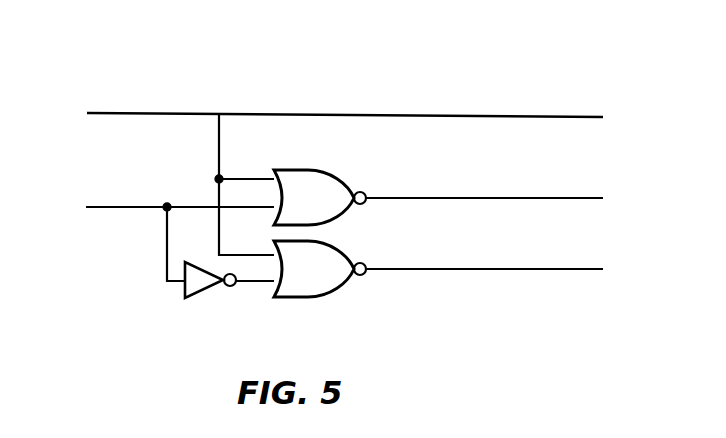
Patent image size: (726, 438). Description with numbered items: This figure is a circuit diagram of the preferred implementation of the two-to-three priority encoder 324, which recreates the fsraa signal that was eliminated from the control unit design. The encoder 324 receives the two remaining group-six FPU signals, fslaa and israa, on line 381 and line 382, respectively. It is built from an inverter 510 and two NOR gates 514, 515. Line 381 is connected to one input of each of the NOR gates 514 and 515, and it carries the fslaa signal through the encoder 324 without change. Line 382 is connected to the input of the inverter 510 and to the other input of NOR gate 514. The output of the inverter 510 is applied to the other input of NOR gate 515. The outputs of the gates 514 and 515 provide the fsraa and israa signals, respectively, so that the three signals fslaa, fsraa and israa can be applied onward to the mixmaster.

The 2-to-3 priority encoder 324 is at (460, 82).
The line 381 is at (110, 113).
The line 382 is at (98, 209).
The NOR gate 514 is at (327, 190).
The NOR gate 515 is at (327, 280).
The inverter 510 is at (208, 297).